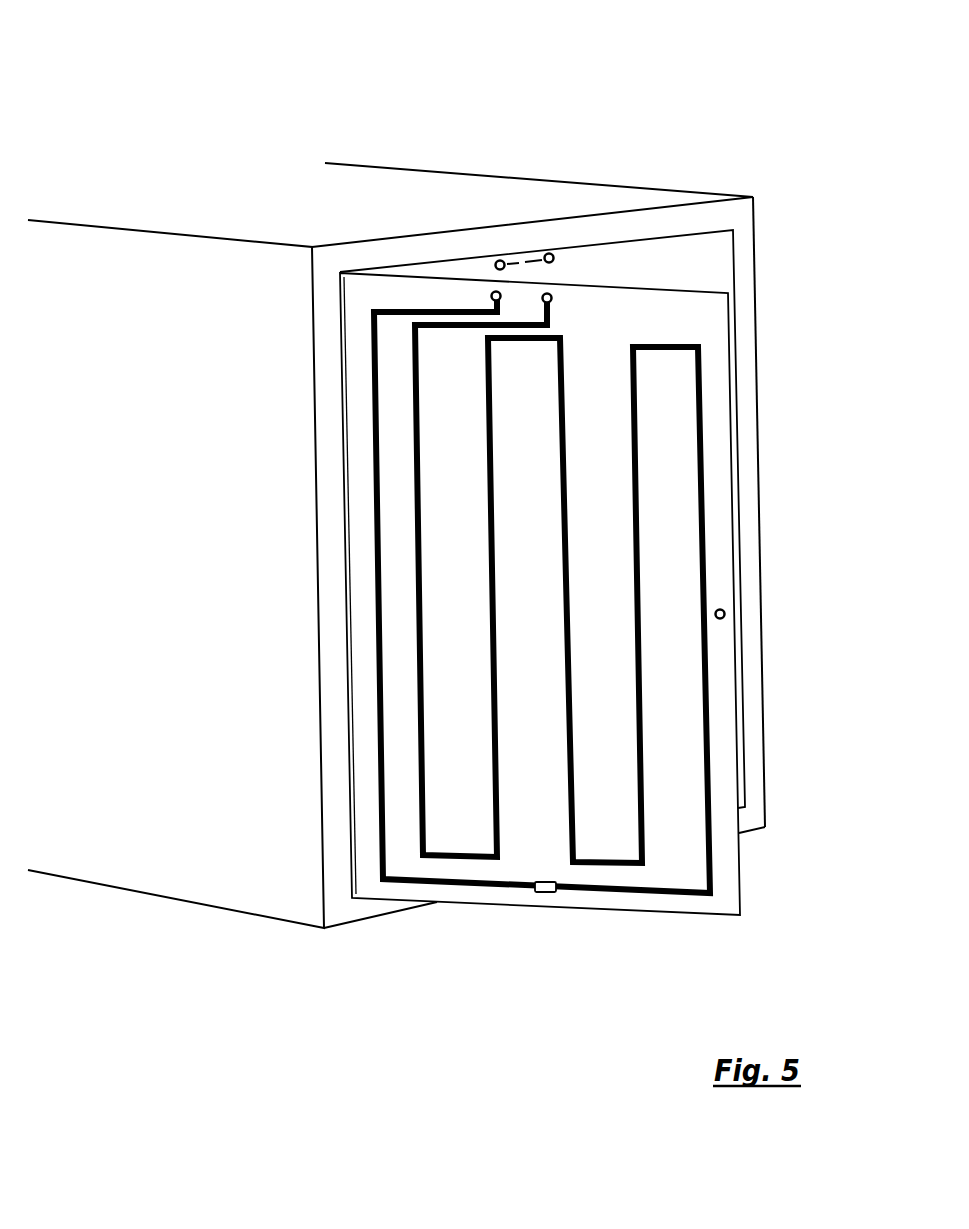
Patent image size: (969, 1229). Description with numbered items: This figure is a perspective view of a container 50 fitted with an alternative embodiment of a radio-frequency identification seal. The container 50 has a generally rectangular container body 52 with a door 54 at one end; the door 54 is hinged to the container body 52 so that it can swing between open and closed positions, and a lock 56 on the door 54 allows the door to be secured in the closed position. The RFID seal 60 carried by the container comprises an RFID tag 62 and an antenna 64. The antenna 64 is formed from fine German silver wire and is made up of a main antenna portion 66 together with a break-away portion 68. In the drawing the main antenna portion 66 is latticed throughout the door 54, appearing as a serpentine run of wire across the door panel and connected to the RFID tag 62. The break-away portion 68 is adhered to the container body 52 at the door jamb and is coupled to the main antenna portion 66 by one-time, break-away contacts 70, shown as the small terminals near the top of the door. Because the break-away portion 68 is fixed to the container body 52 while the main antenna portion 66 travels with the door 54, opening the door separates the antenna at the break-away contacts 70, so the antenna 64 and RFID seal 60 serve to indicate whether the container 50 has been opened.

The container 50 is at (220, 124).
The container body 52 is at (345, 190).
The door 54 is at (671, 285).
The lock 56 is at (729, 598).
The RFID seal 60 is at (396, 908).
The RFID tag 62 is at (547, 907).
The antenna 64 is at (519, 826).
The main antenna portion 66 is at (568, 490).
The break-away portion 68 is at (530, 256).
The break-away contacts 70 is at (488, 256).